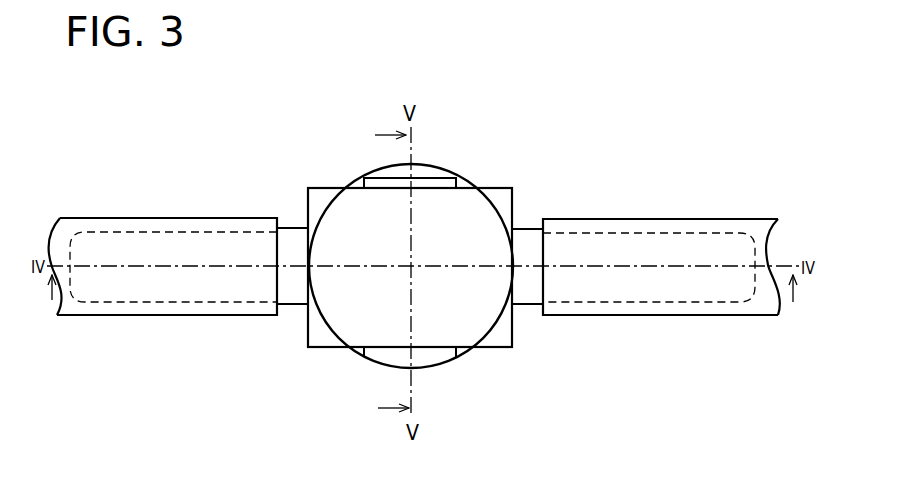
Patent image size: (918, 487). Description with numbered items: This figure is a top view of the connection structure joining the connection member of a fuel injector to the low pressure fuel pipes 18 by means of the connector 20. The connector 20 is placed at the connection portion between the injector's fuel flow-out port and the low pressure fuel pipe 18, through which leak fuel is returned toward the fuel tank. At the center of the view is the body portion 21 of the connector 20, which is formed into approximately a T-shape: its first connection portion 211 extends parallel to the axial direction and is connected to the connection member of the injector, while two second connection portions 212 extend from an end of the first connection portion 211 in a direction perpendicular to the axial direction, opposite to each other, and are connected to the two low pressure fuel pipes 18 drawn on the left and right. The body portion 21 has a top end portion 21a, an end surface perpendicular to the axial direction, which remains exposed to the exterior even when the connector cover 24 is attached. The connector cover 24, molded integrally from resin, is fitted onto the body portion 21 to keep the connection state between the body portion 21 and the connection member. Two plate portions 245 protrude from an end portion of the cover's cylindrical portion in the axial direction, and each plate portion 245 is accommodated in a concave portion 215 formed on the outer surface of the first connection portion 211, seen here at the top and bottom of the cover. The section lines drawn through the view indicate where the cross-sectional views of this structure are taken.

The low pressure fuel pipe 18 is at (78, 218).
The connector 20 is at (295, 163).
The body portion 21 is at (454, 254).
The top end portion 21a is at (443, 237).
The connector cover 24 is at (405, 252).
The first connection portion 211 is at (352, 188).
The second connection portion 212 is at (165, 218).
The concave portion 215 is at (380, 178).
The plate portion 245 is at (440, 180).